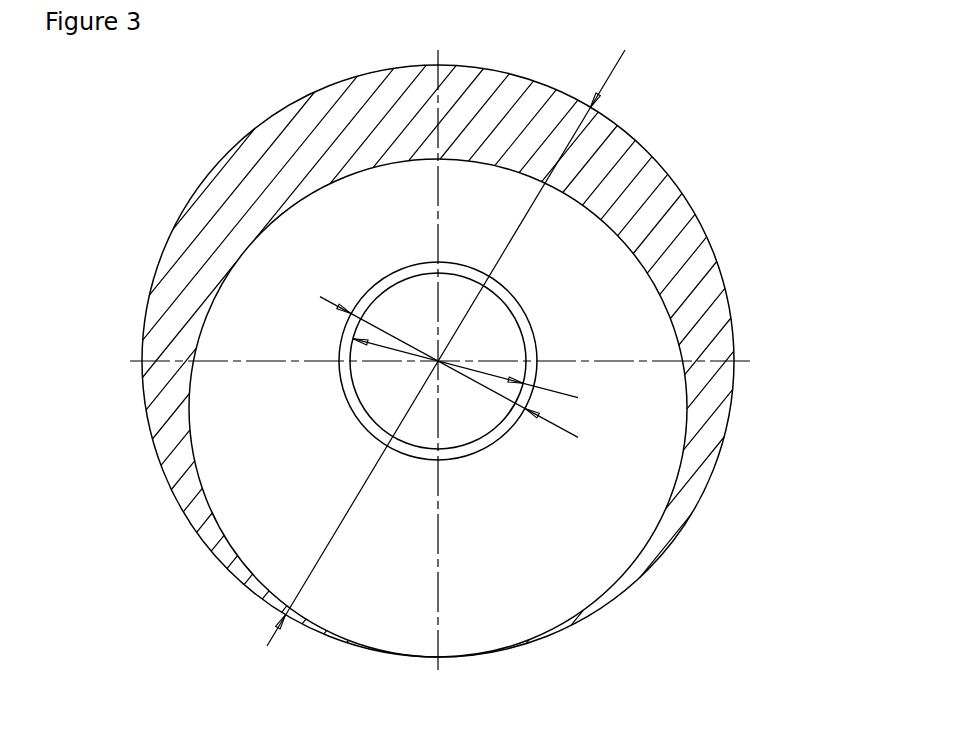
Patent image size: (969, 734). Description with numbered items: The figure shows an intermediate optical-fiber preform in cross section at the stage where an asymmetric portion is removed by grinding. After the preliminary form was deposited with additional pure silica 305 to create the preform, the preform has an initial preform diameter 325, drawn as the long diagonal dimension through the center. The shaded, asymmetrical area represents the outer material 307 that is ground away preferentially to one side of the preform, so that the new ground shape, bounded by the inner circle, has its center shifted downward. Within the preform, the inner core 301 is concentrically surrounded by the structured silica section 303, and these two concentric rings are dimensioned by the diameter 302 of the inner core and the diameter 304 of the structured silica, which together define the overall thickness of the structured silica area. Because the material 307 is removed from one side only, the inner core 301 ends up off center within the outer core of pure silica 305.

The inner core 301 is at (438, 361).
The diameter of the inner core 302 is at (647, 398).
The structured silica section 303 is at (580, 298).
The diameter of the structured silica 304 is at (647, 437).
The pure silica 305 is at (438, 408).
The portion of initial preform 307 is at (657, 208).
The initial preform diameter 325 is at (697, 50).